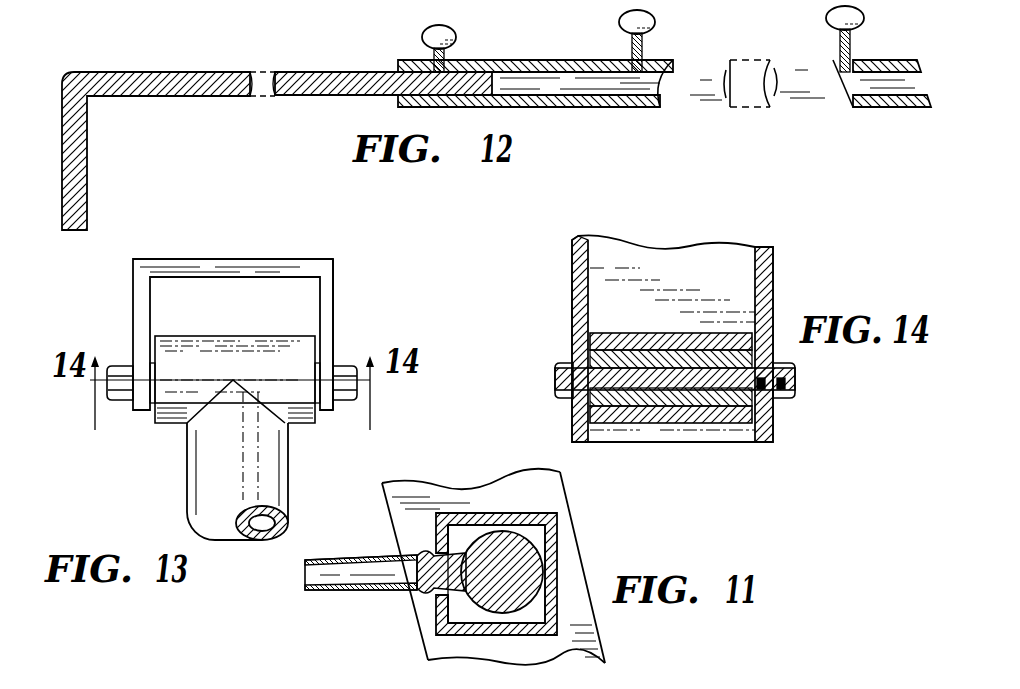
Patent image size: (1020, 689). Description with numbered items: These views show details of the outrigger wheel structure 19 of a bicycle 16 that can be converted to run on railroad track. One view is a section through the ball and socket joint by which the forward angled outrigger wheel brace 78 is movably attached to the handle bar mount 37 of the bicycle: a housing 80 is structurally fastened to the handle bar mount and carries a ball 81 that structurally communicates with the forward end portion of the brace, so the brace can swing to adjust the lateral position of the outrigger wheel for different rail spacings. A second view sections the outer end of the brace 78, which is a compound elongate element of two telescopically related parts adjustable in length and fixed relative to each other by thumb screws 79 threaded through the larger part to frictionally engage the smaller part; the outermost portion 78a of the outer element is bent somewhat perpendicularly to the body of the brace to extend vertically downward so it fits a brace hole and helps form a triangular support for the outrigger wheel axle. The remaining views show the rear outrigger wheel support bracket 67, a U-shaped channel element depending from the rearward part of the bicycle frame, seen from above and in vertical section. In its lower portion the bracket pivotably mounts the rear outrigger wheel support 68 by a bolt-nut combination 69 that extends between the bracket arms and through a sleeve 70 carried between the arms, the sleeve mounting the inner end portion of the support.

In FIG. 11, the bicycle 16 is at (602, 639).
In FIG. 12, the outrigger wheel structure 19 is at (572, 60).
In FIG. 13, the outrigger wheel structure 19 is at (335, 290).
In FIG. 14, the outrigger wheel structure 19 is at (668, 336).
In FIG. 11, the outrigger wheel structure 19 is at (558, 570).
In FIG. 11, the handle bar mount 37 is at (428, 625).
In FIG. 13, the rear outrigger wheel support bracket 67 is at (300, 268).
In FIG. 14, the rear outrigger wheel support bracket 67 is at (685, 270).
In FIG. 13, the rear outrigger wheel support 68 is at (235, 465).
In FIG. 13, the bolt-nut combination 69 is at (118, 372).
In FIG. 14, the bolt-nut combination 69 is at (625, 385).
In FIG. 13, the sleeve 70 is at (278, 357).
In FIG. 14, the sleeve 70 is at (725, 343).
In FIG. 12, the forward angled outrigger wheel brace 78 is at (787, 85).
In FIG. 11, the forward angled outrigger wheel brace 78 is at (380, 590).
In FIG. 12, the outermost bent portion of the brace 78a is at (76, 133).
In FIG. 12, the thumb screws 79 is at (424, 35).
In FIG. 11, the housing 80 is at (514, 520).
In FIG. 11, the ball 81 is at (505, 567).